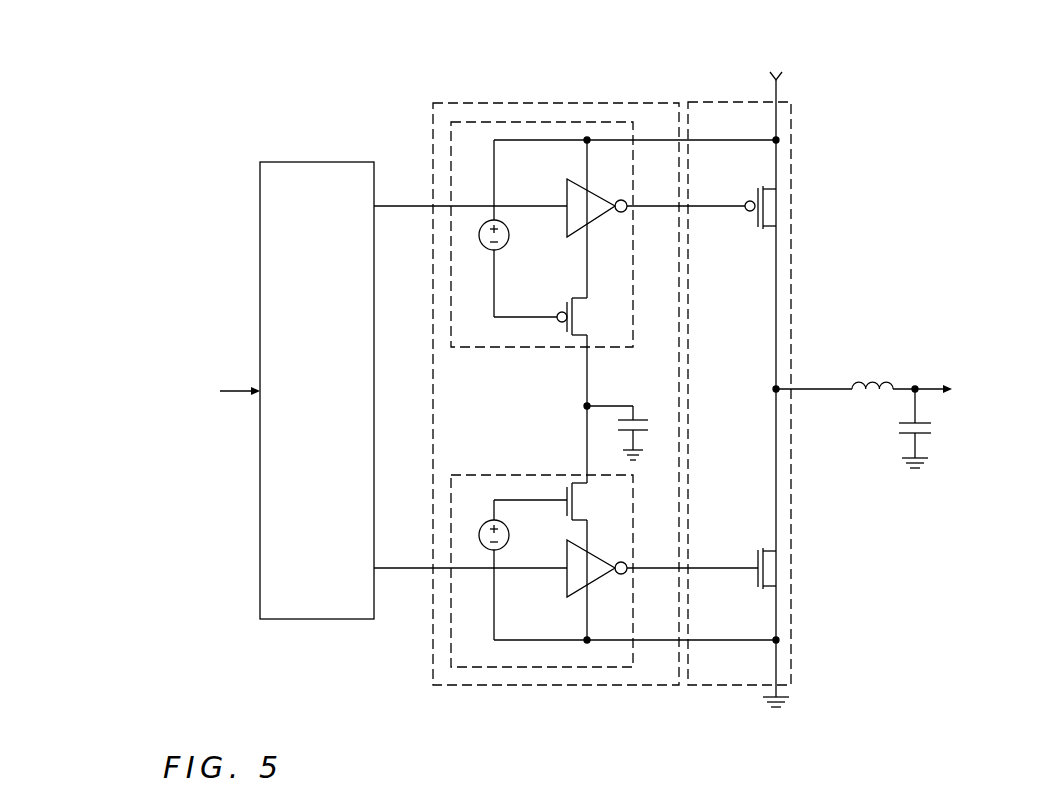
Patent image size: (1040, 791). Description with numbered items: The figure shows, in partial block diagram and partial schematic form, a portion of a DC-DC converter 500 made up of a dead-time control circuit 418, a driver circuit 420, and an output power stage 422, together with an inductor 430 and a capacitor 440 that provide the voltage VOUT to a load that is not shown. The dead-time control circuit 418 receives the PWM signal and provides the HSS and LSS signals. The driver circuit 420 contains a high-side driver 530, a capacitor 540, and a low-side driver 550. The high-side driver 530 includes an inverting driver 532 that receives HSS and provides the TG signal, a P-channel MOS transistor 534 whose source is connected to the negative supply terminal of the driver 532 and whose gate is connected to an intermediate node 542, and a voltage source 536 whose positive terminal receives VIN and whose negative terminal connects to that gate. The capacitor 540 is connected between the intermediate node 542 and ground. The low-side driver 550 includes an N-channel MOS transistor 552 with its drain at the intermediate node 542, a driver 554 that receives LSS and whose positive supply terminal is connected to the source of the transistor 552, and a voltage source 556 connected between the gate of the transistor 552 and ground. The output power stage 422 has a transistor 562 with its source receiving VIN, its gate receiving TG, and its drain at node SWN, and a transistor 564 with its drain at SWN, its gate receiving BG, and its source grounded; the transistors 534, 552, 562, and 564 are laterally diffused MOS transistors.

The DC-DC converter 500 is at (155, 105).
The dead-time control circuit 418 is at (342, 162).
The driver circuit 420 is at (527, 103).
The output power stage 422 is at (727, 102).
The high-side driver 530 is at (510, 350).
The driver 532 is at (567, 192).
The P-channel MOS transistor 534 is at (573, 298).
The voltage source 536 is at (509, 236).
The intermediate node 542 is at (592, 402).
The capacitor 540 is at (645, 432).
The low-side driver 550 is at (513, 475).
The N-channel MOS transistor 552 is at (567, 505).
The driver 554 is at (567, 596).
The voltage source 556 is at (509, 536).
The transistor 562 is at (766, 229).
The transistor 564 is at (766, 590).
The inductor 430 is at (875, 386).
The capacitor 440 is at (932, 436).